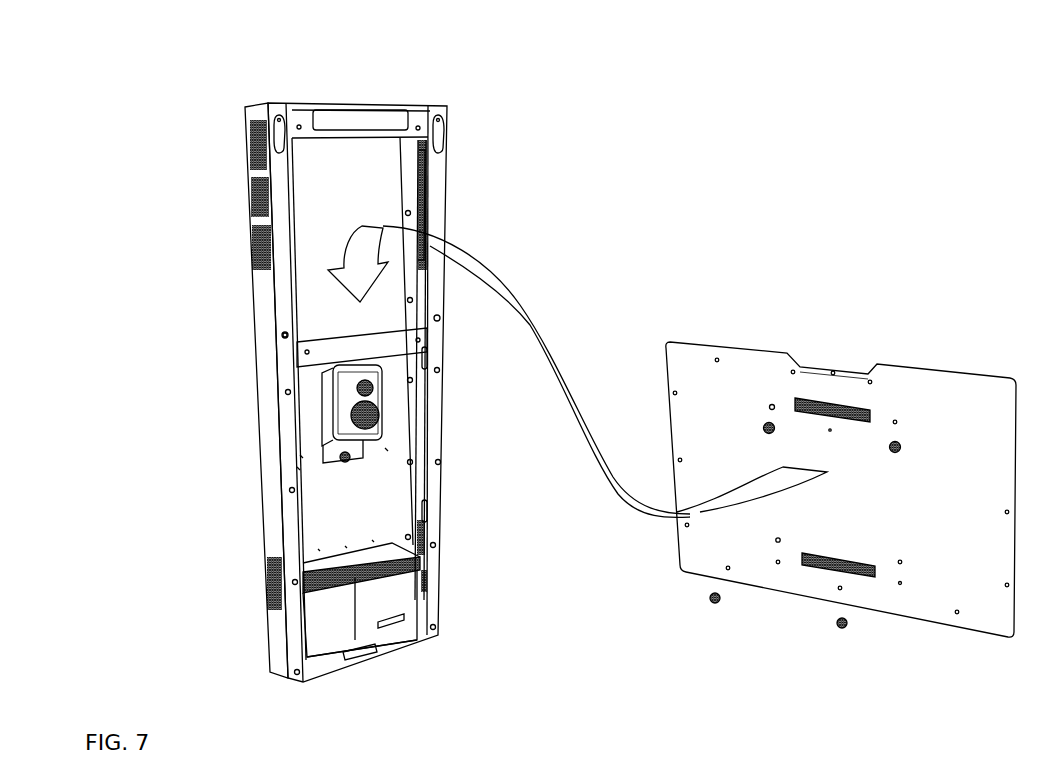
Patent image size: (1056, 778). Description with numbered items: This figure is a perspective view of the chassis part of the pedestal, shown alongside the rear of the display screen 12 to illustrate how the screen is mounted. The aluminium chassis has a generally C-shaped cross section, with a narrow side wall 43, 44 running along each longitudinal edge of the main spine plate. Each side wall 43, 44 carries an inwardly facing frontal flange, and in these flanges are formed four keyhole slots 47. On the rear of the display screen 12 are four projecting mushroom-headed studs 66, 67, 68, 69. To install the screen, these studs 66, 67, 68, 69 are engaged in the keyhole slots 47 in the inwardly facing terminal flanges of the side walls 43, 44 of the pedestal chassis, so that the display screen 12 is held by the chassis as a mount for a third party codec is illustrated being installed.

The display screen 12 is at (782, 390).
The side wall 43 is at (277, 500).
The side wall 44 is at (425, 172).
The keyhole slots 47 is at (245, 125).
The mushroom-headed stud 66 is at (765, 425).
The mushroom-headed stud 67 is at (897, 442).
The mushroom-headed stud 68 is at (716, 604).
The mushroom-headed stud 69 is at (839, 628).